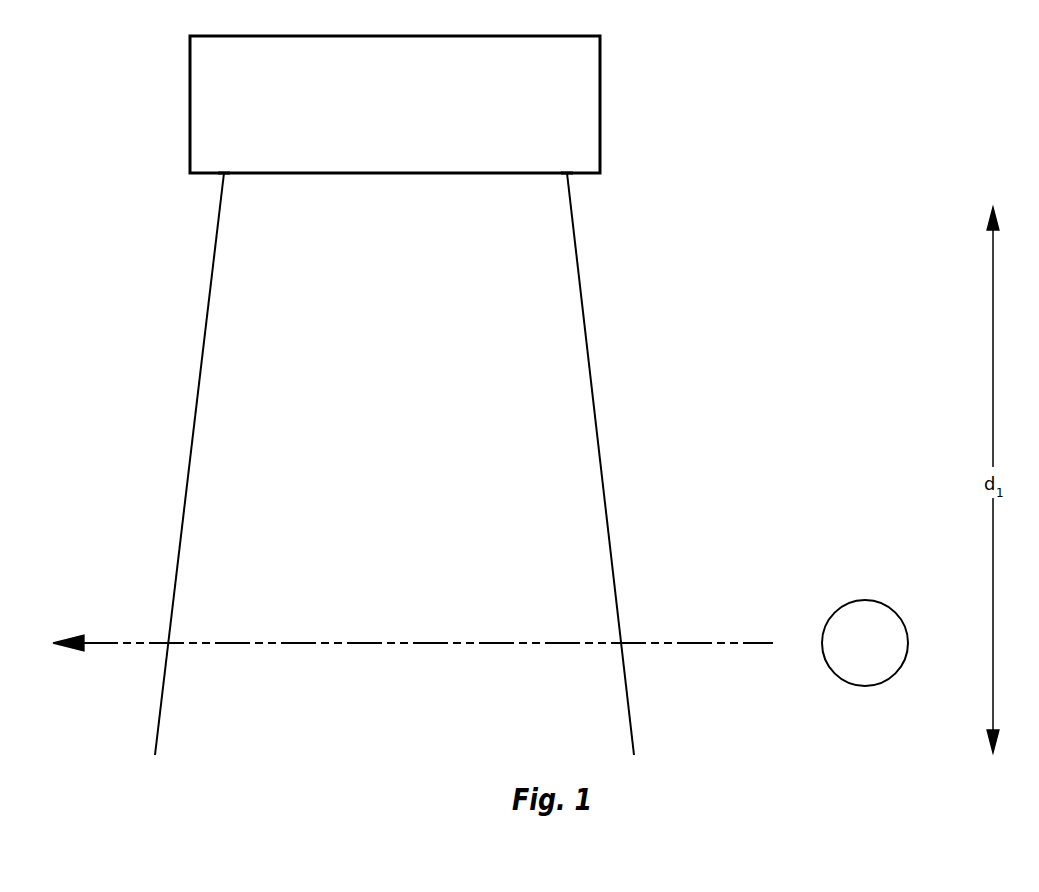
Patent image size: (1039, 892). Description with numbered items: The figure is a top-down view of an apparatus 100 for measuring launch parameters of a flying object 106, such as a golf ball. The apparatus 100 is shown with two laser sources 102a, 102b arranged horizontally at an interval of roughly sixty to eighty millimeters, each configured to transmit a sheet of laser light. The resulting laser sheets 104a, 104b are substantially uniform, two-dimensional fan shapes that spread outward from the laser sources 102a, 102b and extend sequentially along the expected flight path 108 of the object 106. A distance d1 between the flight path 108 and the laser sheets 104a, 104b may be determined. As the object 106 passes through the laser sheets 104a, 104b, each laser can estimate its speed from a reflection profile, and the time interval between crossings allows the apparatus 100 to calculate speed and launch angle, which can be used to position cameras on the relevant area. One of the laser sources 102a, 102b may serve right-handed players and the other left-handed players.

The apparatus 100 is at (395, 104).
The laser source 102a is at (222, 171).
The laser source 102b is at (568, 171).
The laser sheet 104a is at (192, 430).
The laser sheet 104b is at (597, 430).
The flying object 106 is at (834, 613).
The flight path 108 is at (303, 644).